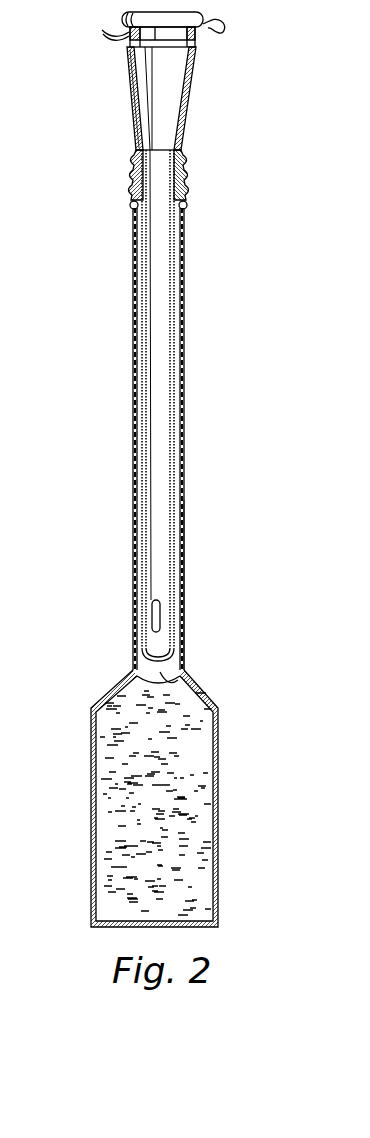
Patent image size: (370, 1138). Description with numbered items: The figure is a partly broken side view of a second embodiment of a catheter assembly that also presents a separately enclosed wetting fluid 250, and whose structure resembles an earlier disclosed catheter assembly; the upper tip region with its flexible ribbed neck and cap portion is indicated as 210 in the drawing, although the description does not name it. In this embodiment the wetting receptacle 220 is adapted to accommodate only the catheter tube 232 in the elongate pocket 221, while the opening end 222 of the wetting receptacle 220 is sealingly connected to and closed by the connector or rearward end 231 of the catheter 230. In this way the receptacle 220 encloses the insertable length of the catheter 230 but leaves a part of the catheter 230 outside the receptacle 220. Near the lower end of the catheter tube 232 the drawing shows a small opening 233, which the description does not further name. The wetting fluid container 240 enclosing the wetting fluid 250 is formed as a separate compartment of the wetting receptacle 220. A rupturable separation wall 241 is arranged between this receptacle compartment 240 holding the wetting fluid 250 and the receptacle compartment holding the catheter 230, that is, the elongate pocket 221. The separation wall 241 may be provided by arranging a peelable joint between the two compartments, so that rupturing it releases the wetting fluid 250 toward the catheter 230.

The funnel / pipette tip 210 is at (128, 184).
The connector or rearward end of the catheter 231 is at (128, 82).
The opening end of the wetting receptacle 222 is at (186, 211).
The wetting receptacle 220 is at (185, 283).
The elongate pocket 221 is at (183, 548).
The catheter 230 is at (163, 333).
The catheter tube 232 is at (162, 390).
The slot / opening 233 is at (152, 620).
The wetting fluid container 240 is at (92, 736).
The rupturable separation wall 241 is at (186, 680).
The wetting fluid 250 is at (122, 835).